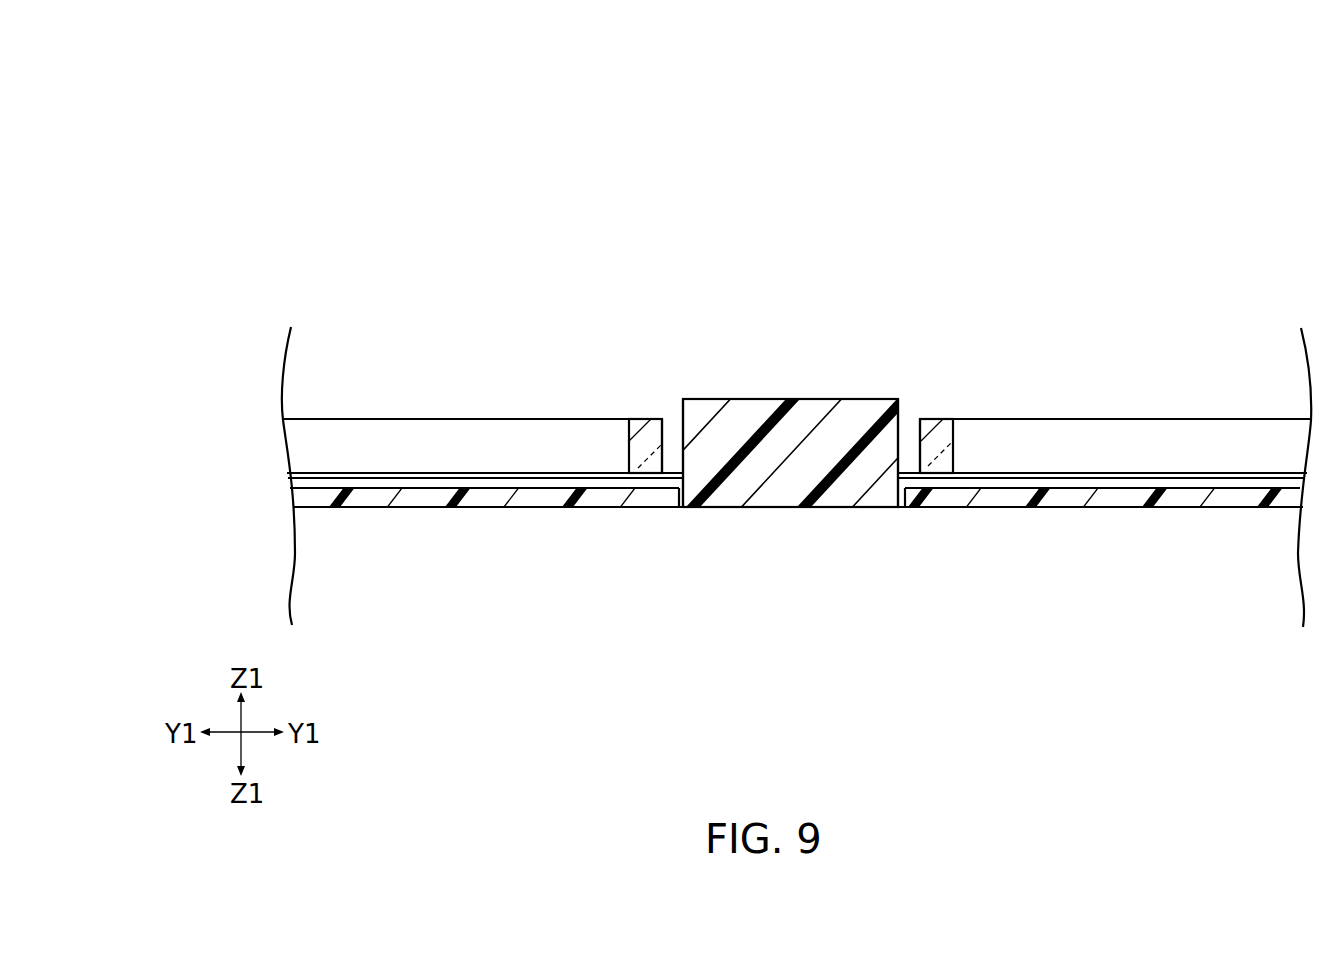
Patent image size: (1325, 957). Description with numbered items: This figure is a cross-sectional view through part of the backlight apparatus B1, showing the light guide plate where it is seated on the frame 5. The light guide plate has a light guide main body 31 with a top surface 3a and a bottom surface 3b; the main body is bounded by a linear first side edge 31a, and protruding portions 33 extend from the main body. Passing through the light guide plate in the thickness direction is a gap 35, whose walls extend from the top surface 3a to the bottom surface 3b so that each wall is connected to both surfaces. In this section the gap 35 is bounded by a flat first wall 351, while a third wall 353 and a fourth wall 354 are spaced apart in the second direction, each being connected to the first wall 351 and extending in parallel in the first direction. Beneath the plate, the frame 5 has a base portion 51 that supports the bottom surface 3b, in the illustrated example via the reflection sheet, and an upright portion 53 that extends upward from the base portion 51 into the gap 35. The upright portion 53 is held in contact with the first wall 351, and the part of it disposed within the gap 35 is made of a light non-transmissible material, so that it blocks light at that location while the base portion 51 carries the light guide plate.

The backlight apparatus B1 is at (265, 130).
The light guide main body 31 is at (541, 458).
The first side edge 31a is at (392, 436).
The protruding portion 33 is at (645, 462).
The top surface 3a is at (645, 418).
The bottom surface 3b is at (645, 458).
The first wall 351 is at (674, 450).
The third wall 353 is at (666, 419).
The fourth wall 354 is at (914, 436).
The gap 35 is at (912, 463).
The frame 5 is at (352, 497).
The base portion 51 is at (1040, 502).
The upright portion 53 is at (795, 458).